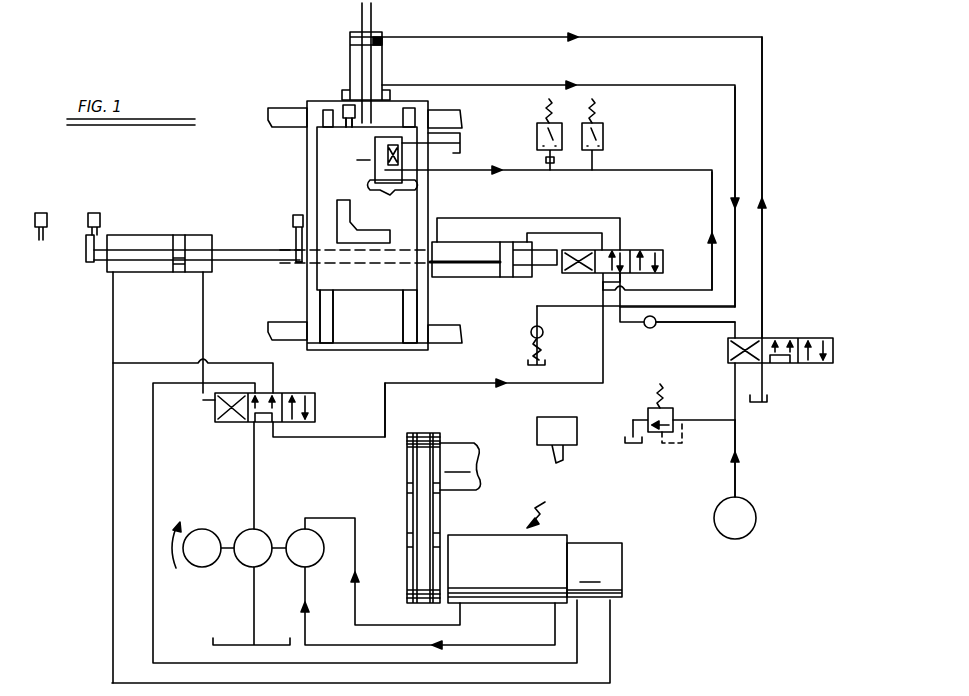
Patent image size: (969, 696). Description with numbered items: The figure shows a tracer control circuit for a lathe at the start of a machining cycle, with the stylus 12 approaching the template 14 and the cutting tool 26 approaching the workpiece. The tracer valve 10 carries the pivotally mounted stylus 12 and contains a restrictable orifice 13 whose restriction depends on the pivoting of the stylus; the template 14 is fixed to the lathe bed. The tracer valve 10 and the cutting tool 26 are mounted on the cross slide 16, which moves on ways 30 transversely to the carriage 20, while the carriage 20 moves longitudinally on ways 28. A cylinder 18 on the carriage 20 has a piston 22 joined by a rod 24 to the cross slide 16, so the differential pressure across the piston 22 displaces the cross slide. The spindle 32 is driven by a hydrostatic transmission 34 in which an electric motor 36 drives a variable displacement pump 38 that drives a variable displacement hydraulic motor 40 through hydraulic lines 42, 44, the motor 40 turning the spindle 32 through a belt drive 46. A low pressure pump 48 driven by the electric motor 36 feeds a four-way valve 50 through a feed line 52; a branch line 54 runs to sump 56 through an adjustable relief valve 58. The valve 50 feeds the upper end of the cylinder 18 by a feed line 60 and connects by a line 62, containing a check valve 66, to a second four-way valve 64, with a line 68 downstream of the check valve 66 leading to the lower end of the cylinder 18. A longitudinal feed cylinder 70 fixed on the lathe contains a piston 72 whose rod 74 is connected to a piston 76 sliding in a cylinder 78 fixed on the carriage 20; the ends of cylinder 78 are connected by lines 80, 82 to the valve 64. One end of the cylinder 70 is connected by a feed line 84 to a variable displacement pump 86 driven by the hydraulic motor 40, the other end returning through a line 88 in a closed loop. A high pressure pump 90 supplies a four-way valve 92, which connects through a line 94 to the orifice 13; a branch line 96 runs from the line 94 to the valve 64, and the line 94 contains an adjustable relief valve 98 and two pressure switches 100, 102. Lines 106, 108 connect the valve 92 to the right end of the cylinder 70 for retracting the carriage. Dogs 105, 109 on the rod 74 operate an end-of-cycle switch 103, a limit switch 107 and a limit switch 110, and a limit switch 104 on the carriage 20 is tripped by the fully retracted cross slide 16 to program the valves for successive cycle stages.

The tracer valve 10 is at (358, 160).
The stylus 12 is at (412, 195).
The restrictable orifice 13 is at (385, 160).
The template 14 is at (366, 240).
The cross slide 16 is at (322, 191).
The cylinder 18 is at (350, 58).
The carriage 20 is at (435, 218).
The piston 22 is at (381, 36).
The rod 24 is at (380, 68).
The cutting tool 26 is at (557, 416).
The ways 28 is at (283, 107).
The ways 30 is at (403, 325).
The machine tool spindle 32 is at (464, 442).
The hydrostatic transmission 34 is at (548, 508).
The electric motor 36 is at (202, 568).
The variable displacement pump 38 is at (316, 530).
The variable displacement hydraulic motor 40 is at (515, 603).
The hydraulic line 42 is at (358, 604).
The hydraulic line 44 is at (306, 628).
The belt drive 46 is at (441, 522).
The low pressure pump 48 is at (757, 508).
The four-way valve 50 is at (834, 352).
The feed line 52 is at (738, 438).
The branch line 54 is at (699, 419).
The sump 56 is at (637, 444).
The adjustable relief valve 58 is at (655, 394).
The feed line 60 is at (765, 112).
The line 62 is at (698, 324).
The four-way valve 64 is at (648, 249).
The check valve 66 is at (647, 329).
The line 68 is at (684, 86).
The longitudinal feed cylinder 70 is at (154, 234).
The piston 72 is at (187, 234).
The rod 74 is at (246, 248).
The piston 76 is at (505, 277).
The cylinder 78 is at (462, 272).
The line 80 is at (491, 227).
The line 82 is at (580, 226).
The feed line 84 is at (203, 298).
The variable displacement pump 86 is at (623, 560).
The line 88 is at (112, 583).
The pump 90 is at (260, 530).
The four-way valve 92 is at (314, 397).
The line 94 is at (690, 170).
The branch line 96 is at (601, 288).
The adjustable relief valve 98 is at (545, 336).
The pressure switch 100 is at (537, 137).
The pressure switch 102 is at (603, 130).
The end-of-cycle switch 103 is at (41, 212).
The limit switch 104 is at (345, 121).
The dog 105 is at (85, 250).
The line 106 is at (163, 362).
The limit switch 107 is at (293, 220).
The line 108 is at (213, 398).
The dog 109 is at (293, 270).
The limit switch 110 is at (100, 212).